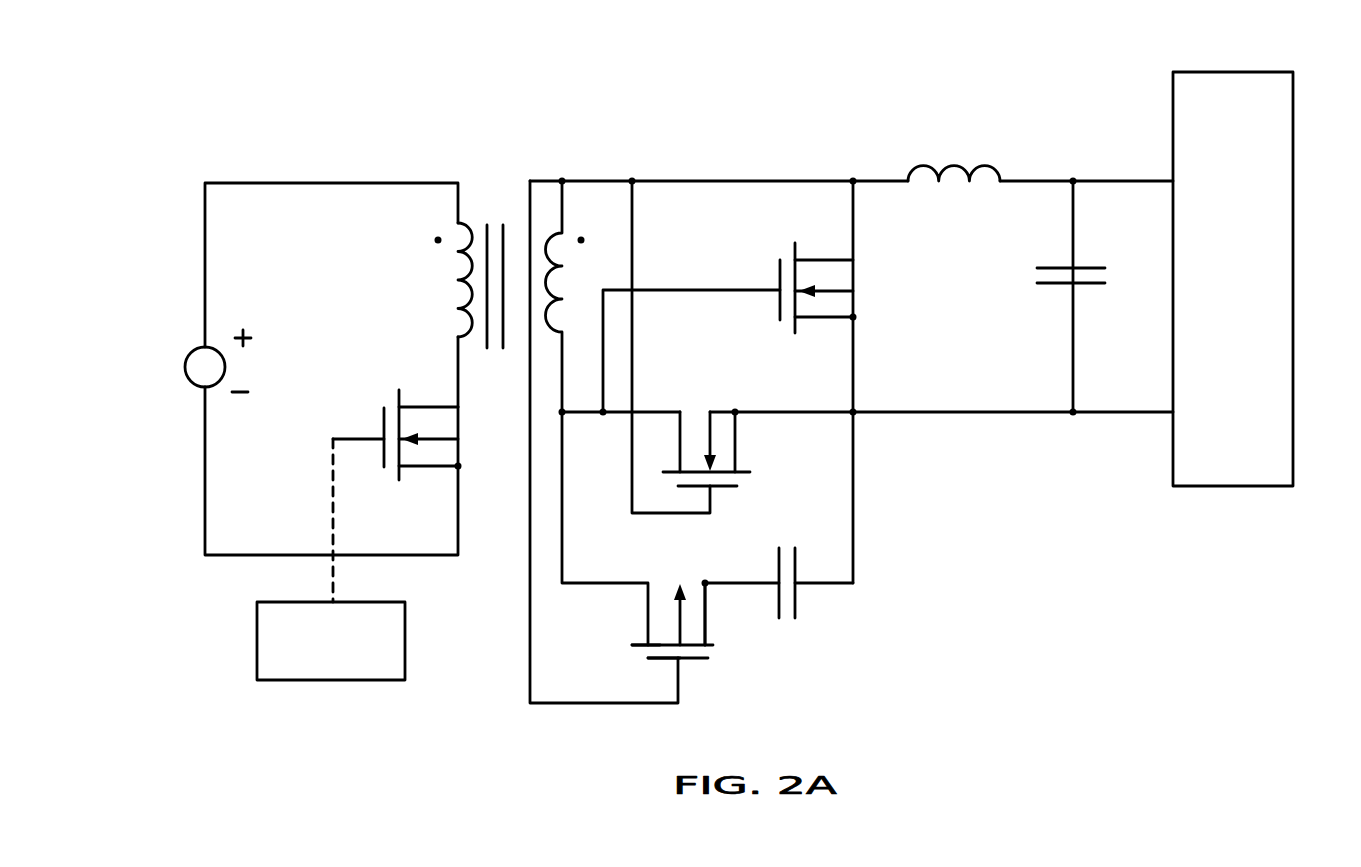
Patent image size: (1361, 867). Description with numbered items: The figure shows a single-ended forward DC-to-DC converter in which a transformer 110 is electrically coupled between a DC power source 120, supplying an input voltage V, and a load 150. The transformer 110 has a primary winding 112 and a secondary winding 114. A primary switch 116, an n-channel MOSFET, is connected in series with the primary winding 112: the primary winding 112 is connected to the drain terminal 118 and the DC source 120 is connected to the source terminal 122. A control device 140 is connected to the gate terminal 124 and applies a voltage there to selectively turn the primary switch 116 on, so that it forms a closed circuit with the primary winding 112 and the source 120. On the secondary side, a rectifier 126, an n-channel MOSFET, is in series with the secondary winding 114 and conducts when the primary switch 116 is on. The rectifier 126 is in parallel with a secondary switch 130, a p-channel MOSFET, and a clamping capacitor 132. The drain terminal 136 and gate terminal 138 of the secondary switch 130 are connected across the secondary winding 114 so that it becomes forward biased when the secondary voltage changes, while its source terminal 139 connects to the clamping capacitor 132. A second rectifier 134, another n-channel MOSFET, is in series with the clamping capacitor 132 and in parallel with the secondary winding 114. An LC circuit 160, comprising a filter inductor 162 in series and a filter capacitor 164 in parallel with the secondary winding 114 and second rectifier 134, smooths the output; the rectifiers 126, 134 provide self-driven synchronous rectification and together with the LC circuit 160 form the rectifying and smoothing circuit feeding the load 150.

The transformer 110 is at (479, 266).
The primary winding 112 is at (458, 226).
The secondary winding 114 is at (592, 222).
The primary switch 116 is at (377, 440).
The drain terminal 118 is at (495, 406).
The DC power source 120 is at (190, 352).
The source terminal 122 is at (494, 471).
The gate terminal 124 is at (333, 440).
The rectifier 126 is at (733, 506).
The secondary switch 130 is at (673, 655).
The clamping capacitor 132 is at (798, 592).
The second rectifier 134 is at (878, 321).
The drain terminal 136 is at (635, 655).
The gate terminal 138 is at (668, 670).
The source terminal 139 is at (738, 618).
The control device 140 is at (377, 602).
The load 150 is at (1293, 182).
The LC circuit 160 is at (1006, 184).
The filter inductor 162 is at (920, 165).
The filter capacitor 164 is at (1073, 265).